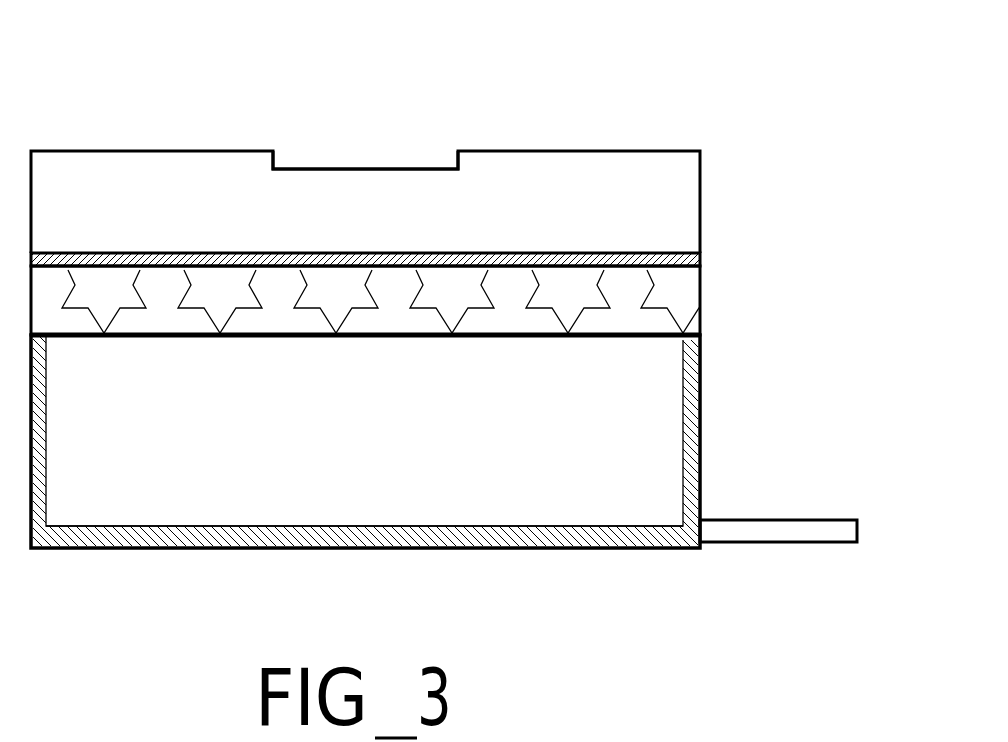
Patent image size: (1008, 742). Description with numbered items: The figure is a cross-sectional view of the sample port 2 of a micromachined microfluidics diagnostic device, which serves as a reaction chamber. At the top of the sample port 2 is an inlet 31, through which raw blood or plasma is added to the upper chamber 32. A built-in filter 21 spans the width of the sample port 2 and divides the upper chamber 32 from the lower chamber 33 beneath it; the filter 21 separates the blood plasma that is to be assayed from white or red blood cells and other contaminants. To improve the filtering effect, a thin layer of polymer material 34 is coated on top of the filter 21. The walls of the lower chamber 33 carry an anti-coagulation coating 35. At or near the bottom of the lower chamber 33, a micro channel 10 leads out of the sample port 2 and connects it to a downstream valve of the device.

The sample port 2 is at (692, 58).
The micro channel 10 is at (753, 528).
The filter 21 is at (600, 317).
The inlet 31 is at (337, 162).
The upper chamber 32 is at (277, 212).
The lower chamber 33 is at (413, 499).
The polymer material 34 is at (593, 258).
The anti-coagulation coating 35 is at (287, 538).